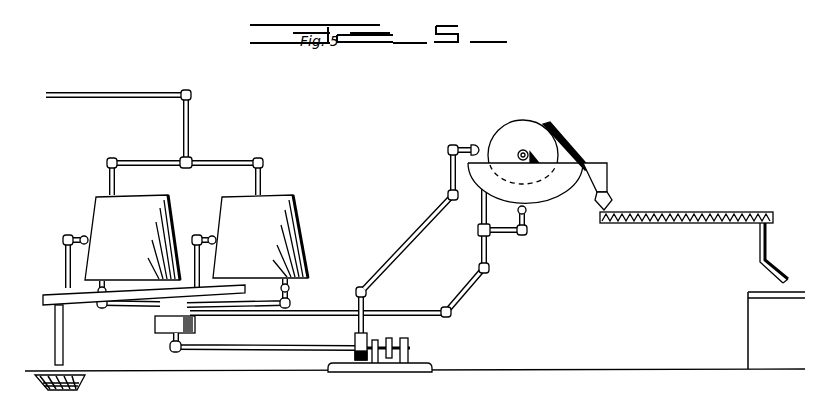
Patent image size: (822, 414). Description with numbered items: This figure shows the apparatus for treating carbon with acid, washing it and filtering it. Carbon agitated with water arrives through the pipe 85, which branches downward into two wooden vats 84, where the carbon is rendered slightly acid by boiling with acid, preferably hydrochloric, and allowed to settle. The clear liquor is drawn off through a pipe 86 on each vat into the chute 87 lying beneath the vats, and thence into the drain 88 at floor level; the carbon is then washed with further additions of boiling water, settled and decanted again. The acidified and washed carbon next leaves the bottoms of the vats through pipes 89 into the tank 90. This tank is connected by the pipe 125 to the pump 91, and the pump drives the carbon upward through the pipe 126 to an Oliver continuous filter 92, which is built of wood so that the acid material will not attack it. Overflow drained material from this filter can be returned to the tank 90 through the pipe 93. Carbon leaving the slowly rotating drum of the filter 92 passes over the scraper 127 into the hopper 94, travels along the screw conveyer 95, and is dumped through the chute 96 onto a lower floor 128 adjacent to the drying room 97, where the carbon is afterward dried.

The wooden vats 84 is at (222, 204).
The pipe 85 is at (105, 93).
The pipe 86 is at (63, 264).
The chute 87 is at (50, 296).
The drain 88 is at (83, 382).
The pipes 89 is at (110, 308).
The tank 90 is at (155, 328).
The pump 91 is at (352, 338).
The Oliver continuous filter 92 is at (512, 127).
The pipe 93 is at (470, 284).
The hopper 94 is at (603, 181).
The screw conveyer 95 is at (681, 212).
The chute 96 is at (758, 244).
The drying room 97 is at (751, 323).
The pipe 125 is at (268, 350).
The pipe 126 is at (420, 230).
The scraper 127 is at (566, 148).
The lower floor 128 is at (748, 294).